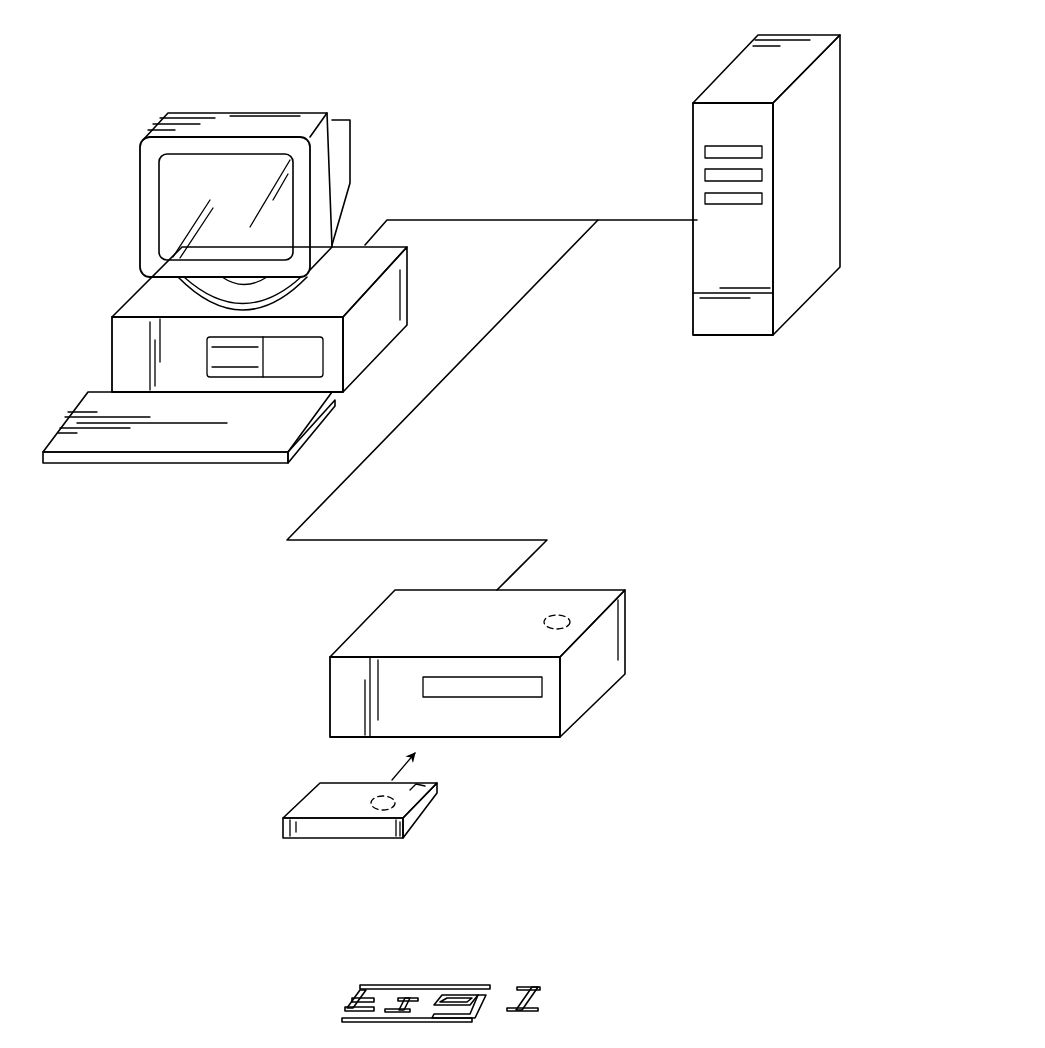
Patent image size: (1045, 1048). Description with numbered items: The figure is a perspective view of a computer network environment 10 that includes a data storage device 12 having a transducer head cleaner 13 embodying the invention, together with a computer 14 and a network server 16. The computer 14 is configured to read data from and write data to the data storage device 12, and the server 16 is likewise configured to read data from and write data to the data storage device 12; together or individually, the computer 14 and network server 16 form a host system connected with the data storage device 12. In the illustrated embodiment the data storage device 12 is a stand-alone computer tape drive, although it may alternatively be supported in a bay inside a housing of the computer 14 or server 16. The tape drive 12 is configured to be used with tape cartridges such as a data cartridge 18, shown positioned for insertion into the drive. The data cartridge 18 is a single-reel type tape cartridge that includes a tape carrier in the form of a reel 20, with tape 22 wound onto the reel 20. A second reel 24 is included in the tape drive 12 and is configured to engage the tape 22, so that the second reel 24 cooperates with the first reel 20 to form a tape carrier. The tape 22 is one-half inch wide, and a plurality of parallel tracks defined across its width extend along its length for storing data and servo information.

The computer network environment 10 is at (792, 687).
The data storage device 12 is at (382, 628).
The transducer head cleaner 13 is at (548, 762).
The computer 14 is at (143, 303).
The network server 16 is at (742, 83).
The data cartridge 18 is at (423, 818).
The reel 20 is at (380, 817).
The tape 22 is at (440, 794).
The second reel 24 is at (562, 613).